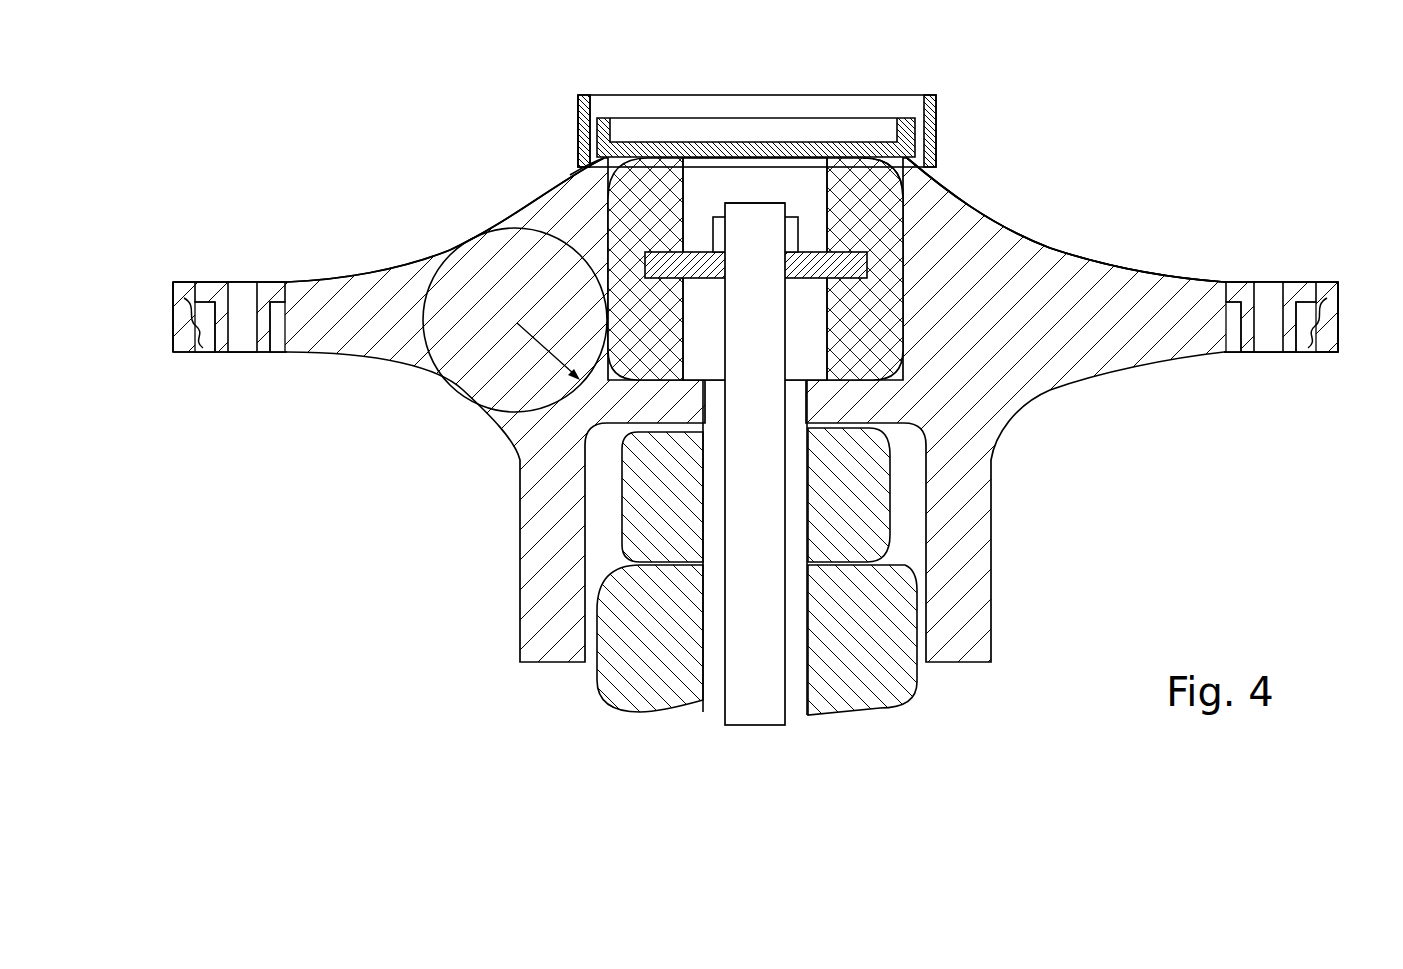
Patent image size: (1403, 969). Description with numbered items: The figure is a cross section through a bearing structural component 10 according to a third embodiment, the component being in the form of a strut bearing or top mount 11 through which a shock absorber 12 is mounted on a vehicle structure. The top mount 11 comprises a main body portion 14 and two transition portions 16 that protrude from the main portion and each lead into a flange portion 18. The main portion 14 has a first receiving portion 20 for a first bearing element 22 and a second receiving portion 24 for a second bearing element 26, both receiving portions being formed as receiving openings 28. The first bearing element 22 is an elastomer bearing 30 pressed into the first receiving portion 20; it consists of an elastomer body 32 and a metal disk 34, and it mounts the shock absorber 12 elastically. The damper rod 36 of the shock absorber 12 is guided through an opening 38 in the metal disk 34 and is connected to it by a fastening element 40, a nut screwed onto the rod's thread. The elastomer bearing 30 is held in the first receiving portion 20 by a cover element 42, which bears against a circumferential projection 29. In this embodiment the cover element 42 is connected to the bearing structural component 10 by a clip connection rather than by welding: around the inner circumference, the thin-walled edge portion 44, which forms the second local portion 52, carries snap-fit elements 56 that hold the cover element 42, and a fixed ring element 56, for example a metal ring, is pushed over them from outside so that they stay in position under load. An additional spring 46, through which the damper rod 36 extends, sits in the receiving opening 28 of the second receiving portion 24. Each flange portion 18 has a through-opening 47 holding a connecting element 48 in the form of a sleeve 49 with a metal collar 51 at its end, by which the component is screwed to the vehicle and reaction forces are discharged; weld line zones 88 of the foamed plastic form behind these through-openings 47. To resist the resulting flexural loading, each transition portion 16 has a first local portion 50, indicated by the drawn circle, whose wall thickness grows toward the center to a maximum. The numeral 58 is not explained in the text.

The bearing structural component 10 is at (1000, 178).
The top mount 11 is at (1025, 206).
The shock absorber 12 is at (704, 720).
The main body portion 14 is at (853, 403).
The transition portion 16 is at (1010, 272).
The flange portion 18 is at (1187, 287).
The first receiving portion 20 is at (917, 218).
The first bearing element 22 is at (910, 220).
The second receiving portion 24 is at (905, 600).
The second bearing element 26 is at (860, 677).
The receiving opening 28 is at (724, 178).
The circumferential projection 29 is at (582, 170).
The elastomer bearing 30 is at (678, 185).
The elastomer body 32 is at (840, 215).
The metal disk 34 is at (867, 275).
The damper rod 36 is at (748, 440).
The opening 38 is at (757, 203).
The fastening element 40 is at (715, 228).
The cover element 42 is at (598, 118).
The edge portion 44 is at (936, 98).
The additional spring 46 is at (640, 667).
The through-opening 47 is at (273, 323).
The connecting element 48 is at (227, 343).
The sleeve 49 is at (230, 310).
The first local portion 50 is at (487, 370).
The collar 51 is at (193, 278).
The second local portion 52 is at (580, 158).
The snap-fit element 56 is at (580, 97).
The cap wall 58 is at (580, 125).
The weld line zone 88 is at (202, 345).